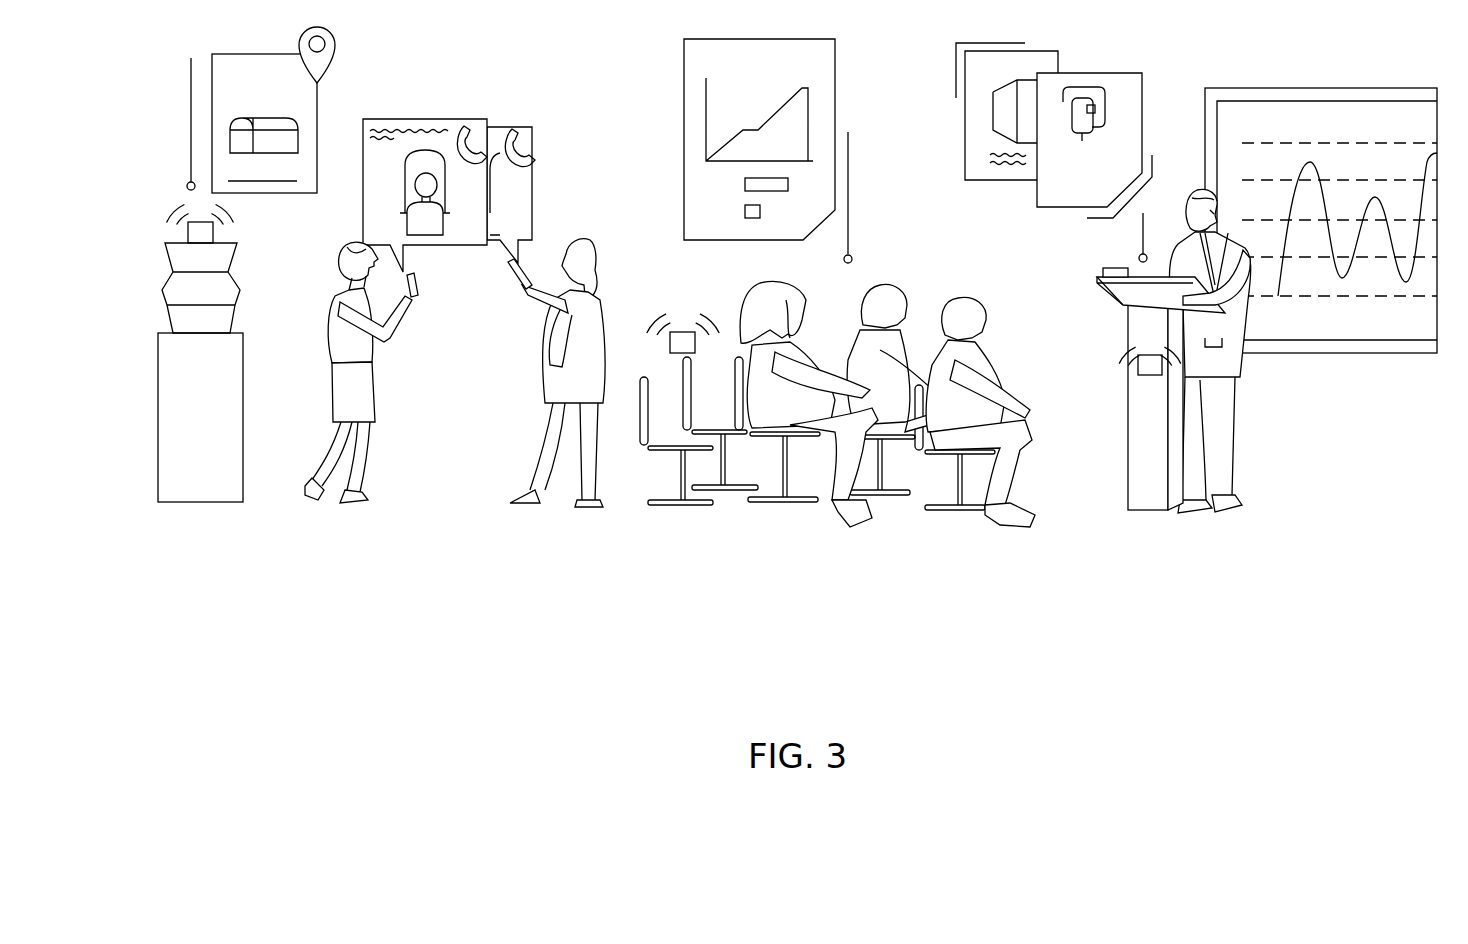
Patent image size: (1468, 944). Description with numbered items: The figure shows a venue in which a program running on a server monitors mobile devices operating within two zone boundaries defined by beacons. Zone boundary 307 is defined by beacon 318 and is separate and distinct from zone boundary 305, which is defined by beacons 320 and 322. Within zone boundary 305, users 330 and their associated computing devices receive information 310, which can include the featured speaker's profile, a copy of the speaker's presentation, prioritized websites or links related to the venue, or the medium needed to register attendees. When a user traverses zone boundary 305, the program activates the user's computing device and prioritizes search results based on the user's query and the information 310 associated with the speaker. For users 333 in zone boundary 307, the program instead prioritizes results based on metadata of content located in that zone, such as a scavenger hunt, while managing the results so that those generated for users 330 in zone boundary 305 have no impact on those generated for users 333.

The zone boundary 305 is at (1030, 374).
The zone boundary 307 is at (378, 368).
The information 310 is at (1155, 53).
The beacon 318 is at (160, 204).
The beacon 320 is at (683, 290).
The beacon 322 is at (1115, 330).
The users 330 is at (636, 520).
The users 333 is at (313, 518).